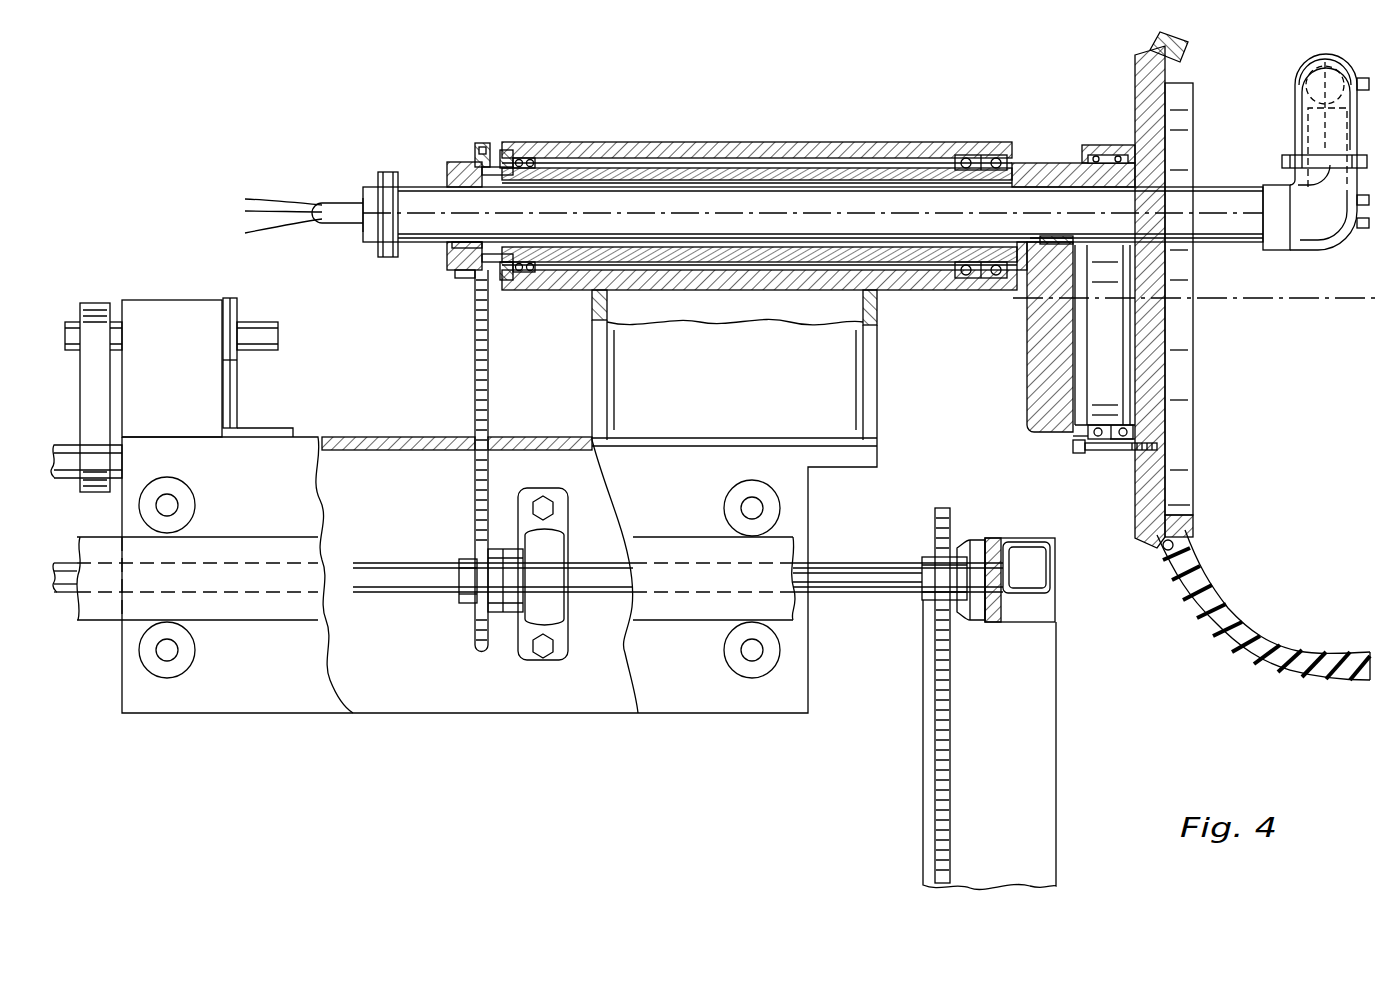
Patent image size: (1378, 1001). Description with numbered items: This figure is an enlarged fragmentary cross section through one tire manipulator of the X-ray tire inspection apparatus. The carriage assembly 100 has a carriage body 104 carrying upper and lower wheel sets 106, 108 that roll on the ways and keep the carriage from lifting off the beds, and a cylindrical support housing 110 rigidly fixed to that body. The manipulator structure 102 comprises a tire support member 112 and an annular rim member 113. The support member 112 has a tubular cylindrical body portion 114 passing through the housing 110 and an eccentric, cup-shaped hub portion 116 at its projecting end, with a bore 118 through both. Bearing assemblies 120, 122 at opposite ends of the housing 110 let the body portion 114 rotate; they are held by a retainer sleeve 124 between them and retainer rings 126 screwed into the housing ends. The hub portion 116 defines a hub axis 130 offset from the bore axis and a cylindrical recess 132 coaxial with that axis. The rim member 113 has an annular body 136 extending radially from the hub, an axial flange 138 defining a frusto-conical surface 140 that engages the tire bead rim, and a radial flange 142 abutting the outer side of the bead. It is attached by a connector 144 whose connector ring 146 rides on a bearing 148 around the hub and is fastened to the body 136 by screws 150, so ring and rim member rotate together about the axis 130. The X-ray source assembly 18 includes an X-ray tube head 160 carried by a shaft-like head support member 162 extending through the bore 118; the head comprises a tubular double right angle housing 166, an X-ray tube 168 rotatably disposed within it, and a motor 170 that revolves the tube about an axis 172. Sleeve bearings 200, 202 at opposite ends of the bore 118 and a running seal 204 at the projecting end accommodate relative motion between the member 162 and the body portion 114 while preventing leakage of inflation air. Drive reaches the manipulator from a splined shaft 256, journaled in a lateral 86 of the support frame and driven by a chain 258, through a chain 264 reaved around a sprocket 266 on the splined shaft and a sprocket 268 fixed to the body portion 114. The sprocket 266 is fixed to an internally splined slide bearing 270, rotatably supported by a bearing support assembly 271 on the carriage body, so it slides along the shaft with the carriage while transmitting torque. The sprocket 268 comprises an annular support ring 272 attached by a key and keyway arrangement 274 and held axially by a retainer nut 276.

The X-ray source assembly 18 is at (1328, 302).
The lateral 86 is at (1048, 593).
The carriage assembly 100 is at (415, 428).
The manipulator structure 102 is at (1045, 163).
The carriage body 104 is at (440, 677).
The upper wheel set 106 is at (195, 505).
The lower wheel set 108 is at (195, 650).
The cylindrical support housing 110 is at (714, 142).
The tire support member 112 is at (1030, 162).
The annular rim member 113 is at (1131, 536).
The tubular cylindrical body portion 114 is at (845, 180).
The hub portion 116 is at (1027, 368).
The bore 118 is at (785, 250).
The bearing assembly 120 is at (523, 158).
The bearing assembly 122 is at (990, 156).
The retainer sleeve 124 is at (765, 168).
The retainer ring 126 is at (505, 150).
The hub axis 130 is at (1222, 298).
The cylindrical recess 132 is at (1090, 425).
The annular body 136 is at (1135, 500).
The axial flange 138 is at (1193, 508).
The frusto-conical surface 140 is at (1193, 526).
The radial flange 142 is at (1157, 545).
The connector 144 is at (1115, 145).
The connector ring 146 is at (1080, 437).
The bearing 148 is at (1112, 442).
The screws 150 is at (1078, 452).
The X-ray tube head 160 is at (1343, 245).
The head support member 162 is at (912, 224).
The tubular double right angle housing 166 is at (1276, 185).
The X-ray tube 168 is at (1305, 66).
The motor 170 is at (1305, 136).
The axis 172 is at (1310, 90).
The sleeve bearing 200 is at (455, 246).
The sleeve bearing 202 is at (1046, 240).
The running seal 204 is at (1060, 243).
The splined shaft 256 is at (848, 592).
The chain 258 is at (953, 748).
The chain 264 is at (488, 396).
The sprocket 266 is at (478, 614).
The sprocket 268 is at (478, 150).
The slide bearing 270 is at (462, 559).
The bearing support assembly 271 is at (556, 545).
The annular support ring 272 is at (457, 164).
The key and keyway arrangement 274 is at (497, 176).
The retainer nut 276 is at (464, 274).